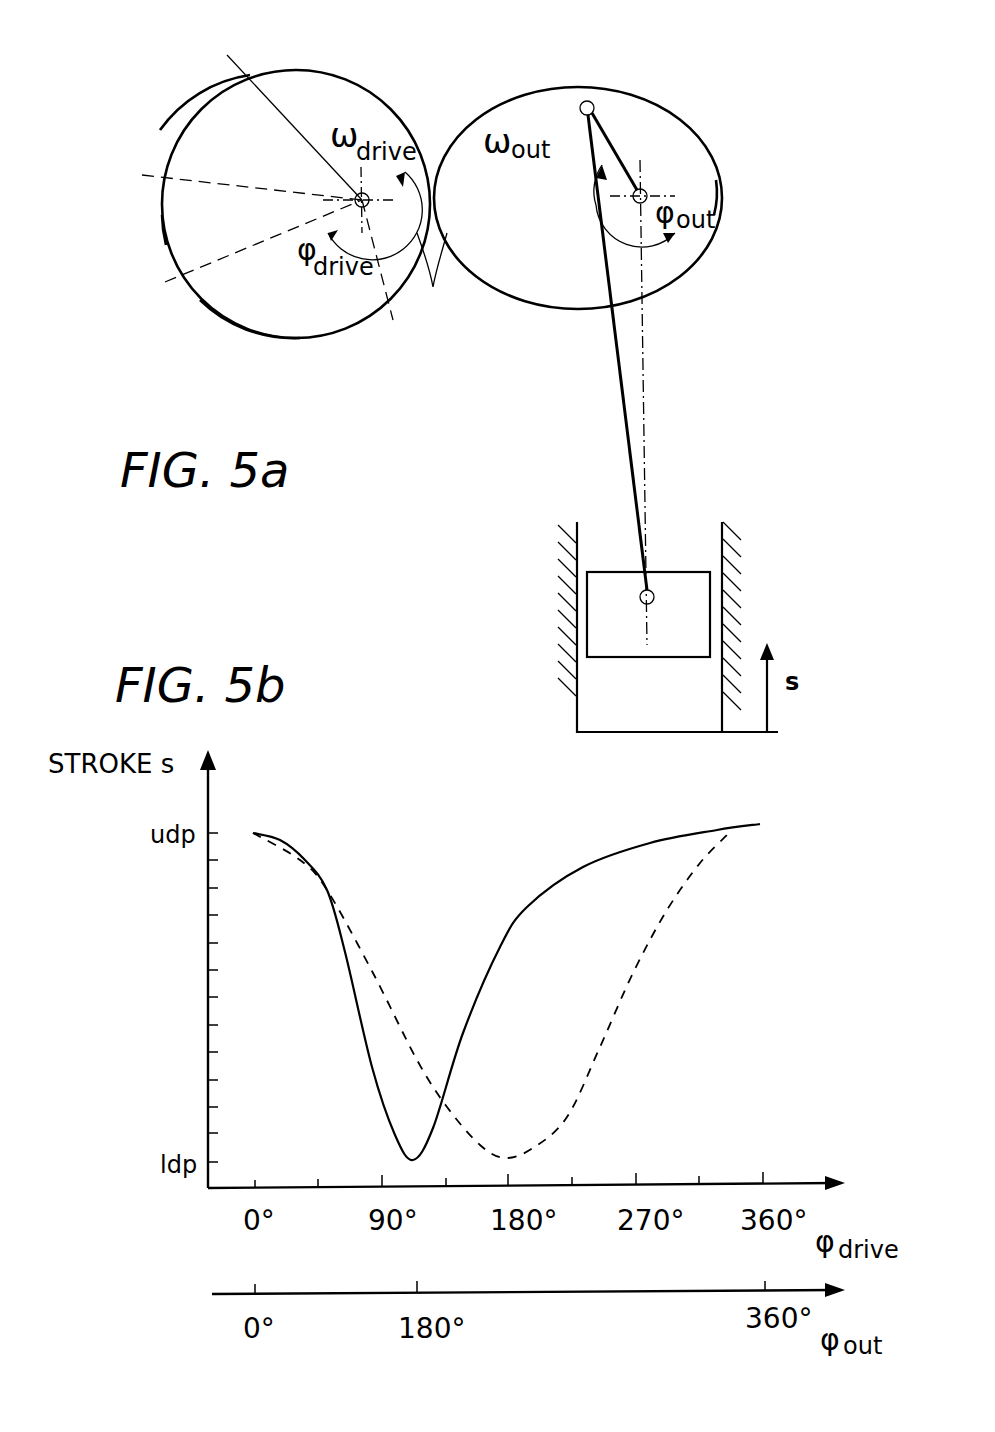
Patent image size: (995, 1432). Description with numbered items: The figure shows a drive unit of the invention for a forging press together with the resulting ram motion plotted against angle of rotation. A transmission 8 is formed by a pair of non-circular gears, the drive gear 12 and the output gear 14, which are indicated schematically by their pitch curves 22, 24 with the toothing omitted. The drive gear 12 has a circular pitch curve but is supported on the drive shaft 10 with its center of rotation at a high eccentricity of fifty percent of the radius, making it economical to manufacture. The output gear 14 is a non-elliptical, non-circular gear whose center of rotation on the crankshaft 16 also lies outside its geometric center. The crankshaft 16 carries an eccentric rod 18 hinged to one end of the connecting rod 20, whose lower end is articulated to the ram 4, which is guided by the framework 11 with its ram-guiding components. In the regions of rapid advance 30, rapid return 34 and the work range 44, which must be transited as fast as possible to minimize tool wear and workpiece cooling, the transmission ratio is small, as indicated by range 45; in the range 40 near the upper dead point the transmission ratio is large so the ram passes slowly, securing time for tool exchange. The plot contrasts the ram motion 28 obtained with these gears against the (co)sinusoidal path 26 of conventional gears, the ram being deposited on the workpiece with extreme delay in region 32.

In FIG. 5A, the ram 4 is at (600, 615).
In FIG. 5A, the transmission 8 is at (449, 80).
In FIG. 5A, the drive shaft 10 is at (282, 119).
In FIG. 5A, the framework 11 is at (733, 578).
In FIG. 5A, the drive gear 12 is at (293, 82).
In FIG. 5A, the output gear 14 is at (542, 285).
In FIG. 5A, the crankshaft 16 is at (647, 190).
In FIG. 5A, the eccentric rod 18 is at (605, 133).
In FIG. 5A, the connecting rod 20 is at (617, 403).
In FIG. 5A, the pitch curve of the drive gear 22 is at (213, 97).
In FIG. 5A, the pitch curve of the output gear 24 is at (683, 115).
In FIG. 5B, the (co)sinusoidal ram-stroke 26 is at (665, 915).
In FIG. 5B, the ram motion 28 is at (583, 866).
In FIG. 5A, the region of rapid advance 30 is at (248, 305).
In FIG. 5B, the region of rapid advance 30 is at (347, 955).
In FIG. 5B, the ram deposition region 32 is at (372, 1067).
In FIG. 5A, the region of rapid return 34 is at (188, 138).
In FIG. 5B, the region of rapid return 34 is at (433, 1128).
In FIG. 5A, the range of large transmission ratio 40 is at (435, 279).
In FIG. 5A, the work range 44 is at (187, 208).
In FIG. 5B, the work range 44 is at (393, 1133).
In FIG. 5A, the range of small transmission ratio 45 is at (162, 228).